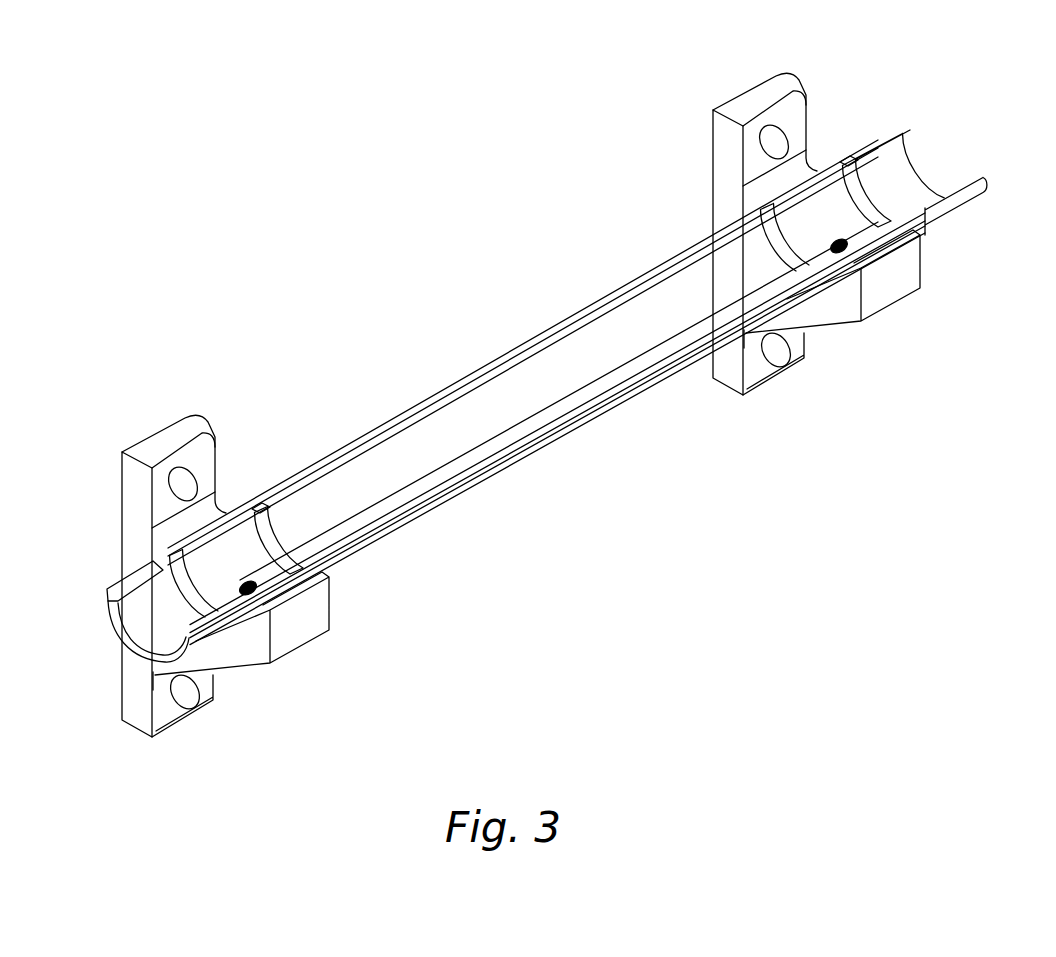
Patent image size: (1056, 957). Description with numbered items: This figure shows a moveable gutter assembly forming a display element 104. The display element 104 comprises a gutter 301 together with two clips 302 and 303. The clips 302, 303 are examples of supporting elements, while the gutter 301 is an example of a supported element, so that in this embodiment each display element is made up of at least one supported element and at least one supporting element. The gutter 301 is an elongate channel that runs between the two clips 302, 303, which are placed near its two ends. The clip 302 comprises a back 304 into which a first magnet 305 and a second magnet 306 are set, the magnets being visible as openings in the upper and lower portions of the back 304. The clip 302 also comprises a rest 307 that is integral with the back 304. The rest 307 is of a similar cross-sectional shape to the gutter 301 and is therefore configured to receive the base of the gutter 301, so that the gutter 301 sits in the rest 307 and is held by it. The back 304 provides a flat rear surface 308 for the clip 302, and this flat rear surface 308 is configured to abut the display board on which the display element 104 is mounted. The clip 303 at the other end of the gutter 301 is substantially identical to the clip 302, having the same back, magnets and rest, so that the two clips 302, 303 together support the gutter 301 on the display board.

The display element 104 is at (468, 305).
The gutter 301 is at (540, 447).
The clip 302 is at (190, 430).
The clip 303 is at (775, 90).
The back 304 is at (122, 505).
The first magnet 305 is at (195, 486).
The second magnet 306 is at (178, 695).
The rest 307 is at (318, 612).
The flat rear surface 308 is at (122, 556).